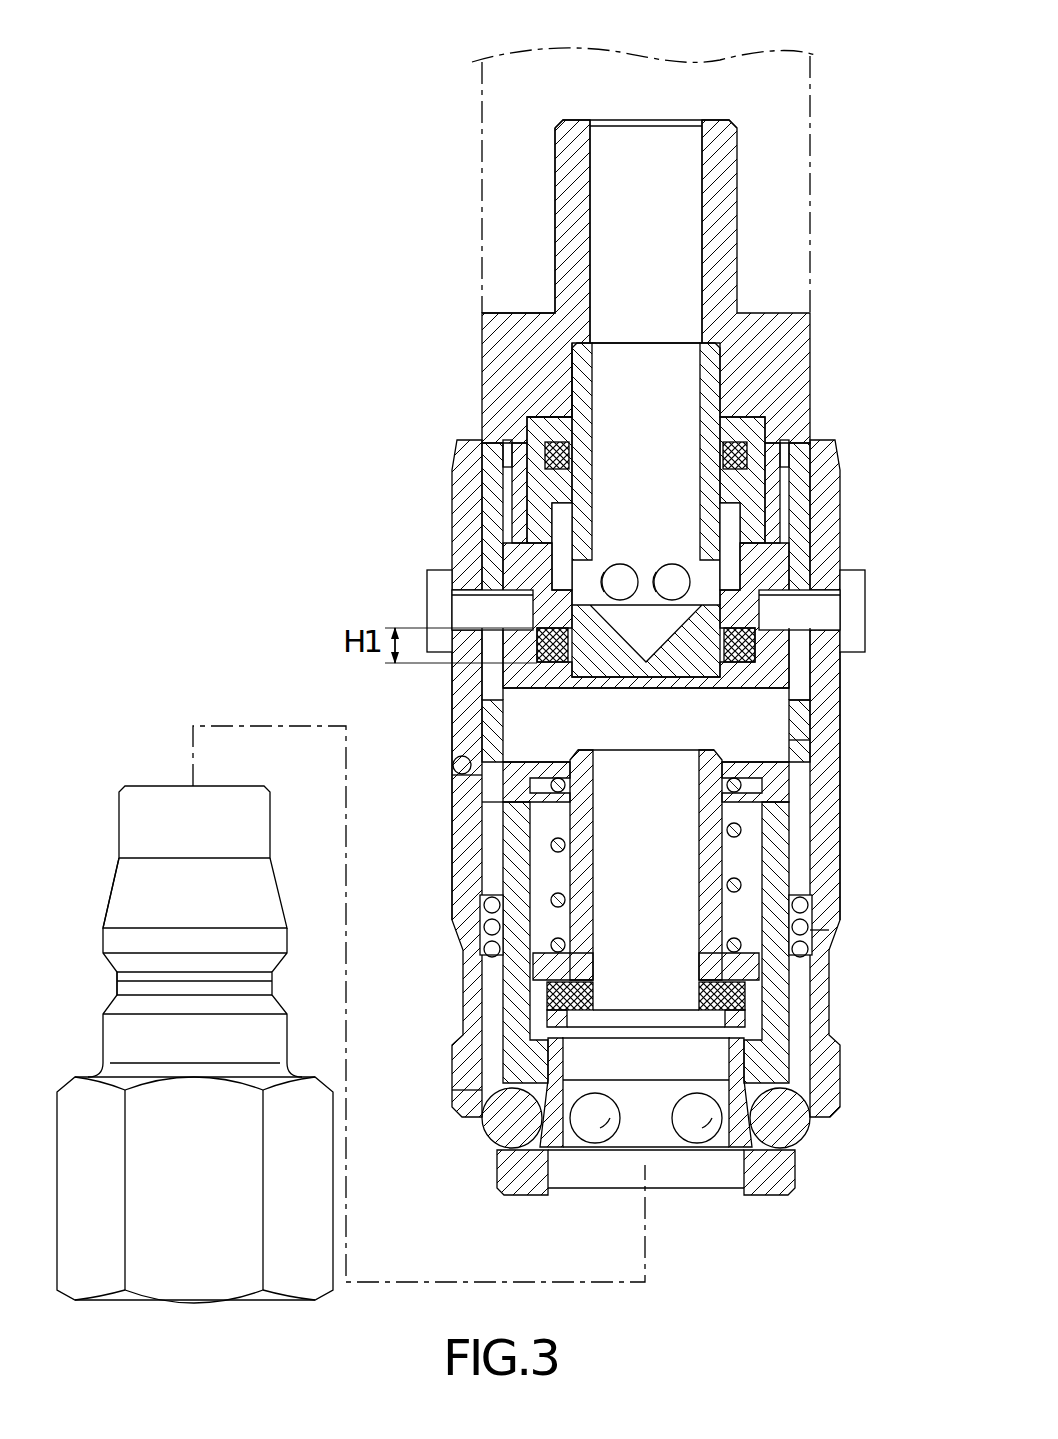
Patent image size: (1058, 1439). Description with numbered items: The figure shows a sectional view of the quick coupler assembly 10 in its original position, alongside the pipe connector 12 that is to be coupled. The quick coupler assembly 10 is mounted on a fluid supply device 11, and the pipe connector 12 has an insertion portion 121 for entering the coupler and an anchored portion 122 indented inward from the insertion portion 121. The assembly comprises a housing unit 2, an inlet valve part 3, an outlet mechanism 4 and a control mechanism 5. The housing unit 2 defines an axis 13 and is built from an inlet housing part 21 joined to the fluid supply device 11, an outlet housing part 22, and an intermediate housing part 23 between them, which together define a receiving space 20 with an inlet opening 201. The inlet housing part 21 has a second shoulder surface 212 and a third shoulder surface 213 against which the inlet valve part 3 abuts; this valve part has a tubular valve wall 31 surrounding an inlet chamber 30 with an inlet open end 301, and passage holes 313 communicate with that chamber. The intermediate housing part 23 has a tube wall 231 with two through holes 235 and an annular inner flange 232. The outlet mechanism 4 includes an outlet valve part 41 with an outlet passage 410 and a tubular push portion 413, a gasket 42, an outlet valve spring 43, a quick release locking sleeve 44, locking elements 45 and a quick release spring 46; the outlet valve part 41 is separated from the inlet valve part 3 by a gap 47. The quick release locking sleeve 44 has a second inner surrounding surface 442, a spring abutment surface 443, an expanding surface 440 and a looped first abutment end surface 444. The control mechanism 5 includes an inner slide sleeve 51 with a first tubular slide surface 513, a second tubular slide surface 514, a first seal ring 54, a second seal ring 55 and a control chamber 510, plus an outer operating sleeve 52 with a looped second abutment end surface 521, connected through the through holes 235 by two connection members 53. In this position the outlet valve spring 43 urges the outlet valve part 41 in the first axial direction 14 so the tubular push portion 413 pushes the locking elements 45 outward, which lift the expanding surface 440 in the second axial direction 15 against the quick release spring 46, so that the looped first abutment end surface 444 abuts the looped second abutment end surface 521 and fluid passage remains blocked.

The inlet opening 201 is at (668, 122).
The fluid supply device 11 is at (782, 150).
The inlet open end 301 is at (615, 335).
The inlet chamber 30 is at (653, 380).
The third shoulder surface 213 is at (565, 305).
The inlet housing part 21 is at (780, 332).
The inlet valve part 3 is at (563, 358).
The second shoulder surface 212 is at (553, 413).
The second tubular slide surface 514 is at (548, 445).
The inner slide sleeve 51 is at (543, 487).
The second seal ring 55 is at (755, 440).
The quick coupler assembly 10 is at (853, 427).
The passage holes 313 is at (515, 508).
The tubular valve wall 31 is at (740, 515).
The through holes 235 is at (493, 548).
The control mechanism 5 is at (425, 550).
The connection members 53 is at (440, 612).
The control chamber 510 is at (775, 596).
The first tubular slide surface 513 is at (487, 655).
The first seal ring 54 is at (745, 650).
The first axial direction 14 is at (927, 737).
The gap 47 is at (607, 720).
The annular inner flange 232 is at (800, 703).
The outer operating sleeve 52 is at (530, 735).
The tube wall 231 is at (800, 728).
The looped second abutment end surface 521 is at (478, 767).
The outlet passage 410 is at (680, 845).
The pipe connector 12 is at (297, 842).
The looped first abutment end surface 444 is at (480, 795).
The housing unit 2 is at (813, 846).
The second axial direction 15 is at (927, 807).
The receiving space 20 is at (528, 733).
The intermediate housing part 23 is at (470, 855).
The outlet valve part 41 is at (740, 965).
The outlet valve spring 43 is at (497, 918).
The quick release spring 46 is at (815, 950).
The spring abutment surface 443 is at (495, 907).
The gasket 42 is at (745, 1000).
The quick release locking sleeve 44 is at (848, 1052).
The second inner surrounding surface 442 is at (460, 1050).
The outlet housing part 22 is at (789, 1064).
The expanding surface 440 is at (480, 1105).
The locking elements 45 is at (784, 1110).
The outlet mechanism 4 is at (430, 1128).
The tubular push portion 413 is at (568, 1107).
The axis 13 is at (645, 1257).
The insertion portion 121 is at (120, 898).
The anchored portion 122 is at (135, 985).